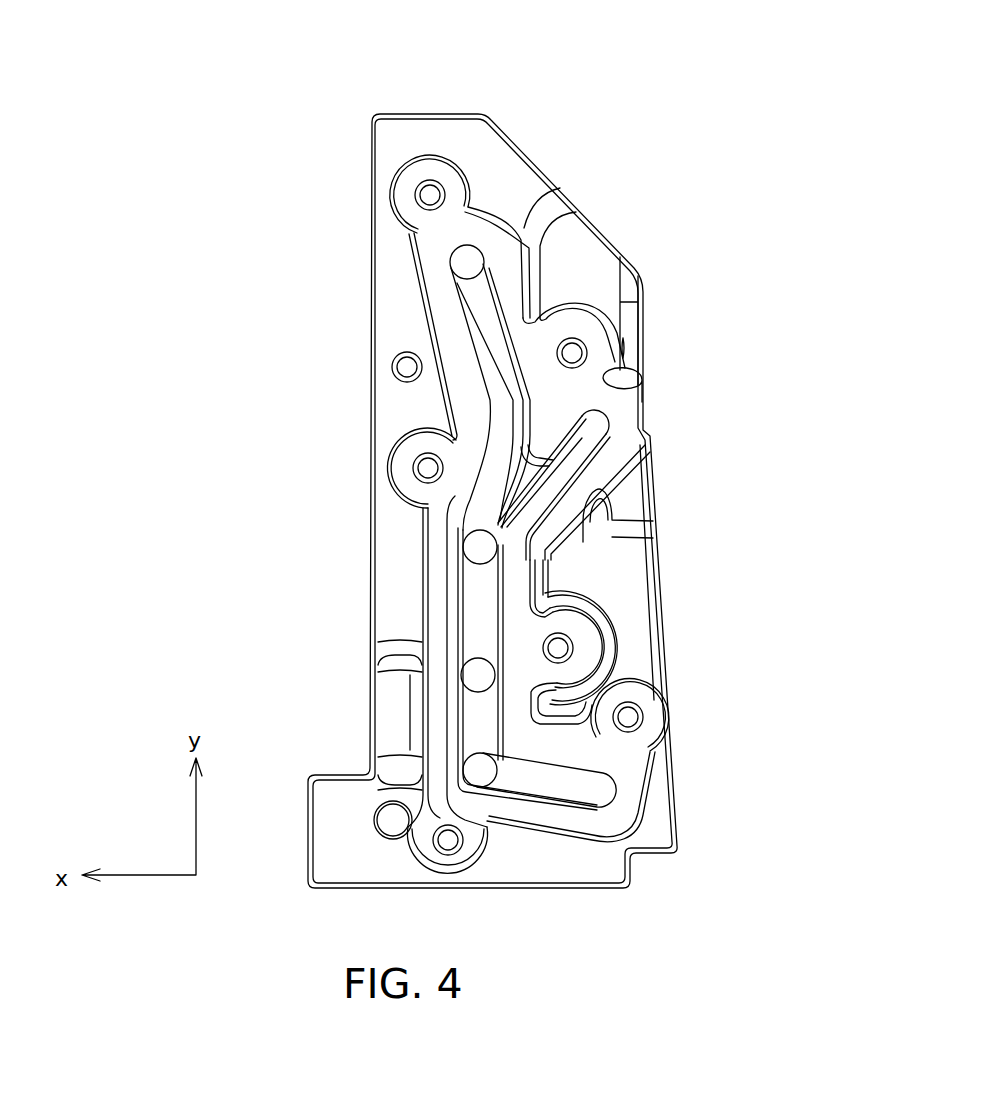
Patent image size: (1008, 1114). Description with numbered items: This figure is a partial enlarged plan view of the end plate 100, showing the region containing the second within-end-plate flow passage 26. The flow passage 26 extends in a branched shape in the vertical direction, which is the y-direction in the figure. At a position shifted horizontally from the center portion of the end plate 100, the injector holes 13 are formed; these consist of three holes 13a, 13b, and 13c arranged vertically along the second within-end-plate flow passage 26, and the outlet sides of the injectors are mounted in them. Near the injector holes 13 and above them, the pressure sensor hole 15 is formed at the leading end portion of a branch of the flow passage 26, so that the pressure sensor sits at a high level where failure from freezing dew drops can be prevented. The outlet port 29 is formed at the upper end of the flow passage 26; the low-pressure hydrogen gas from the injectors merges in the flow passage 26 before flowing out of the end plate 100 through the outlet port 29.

The end plate 100 is at (668, 103).
The outlet port 29 is at (467, 262).
The second within-end-plate flow passage 26 is at (487, 340).
The pressure sensor hole 15 is at (607, 424).
The injector holes 13 is at (663, 669).
The injector hole 13a is at (480, 547).
The injector hole 13b is at (478, 675).
The injector hole 13c is at (478, 767).